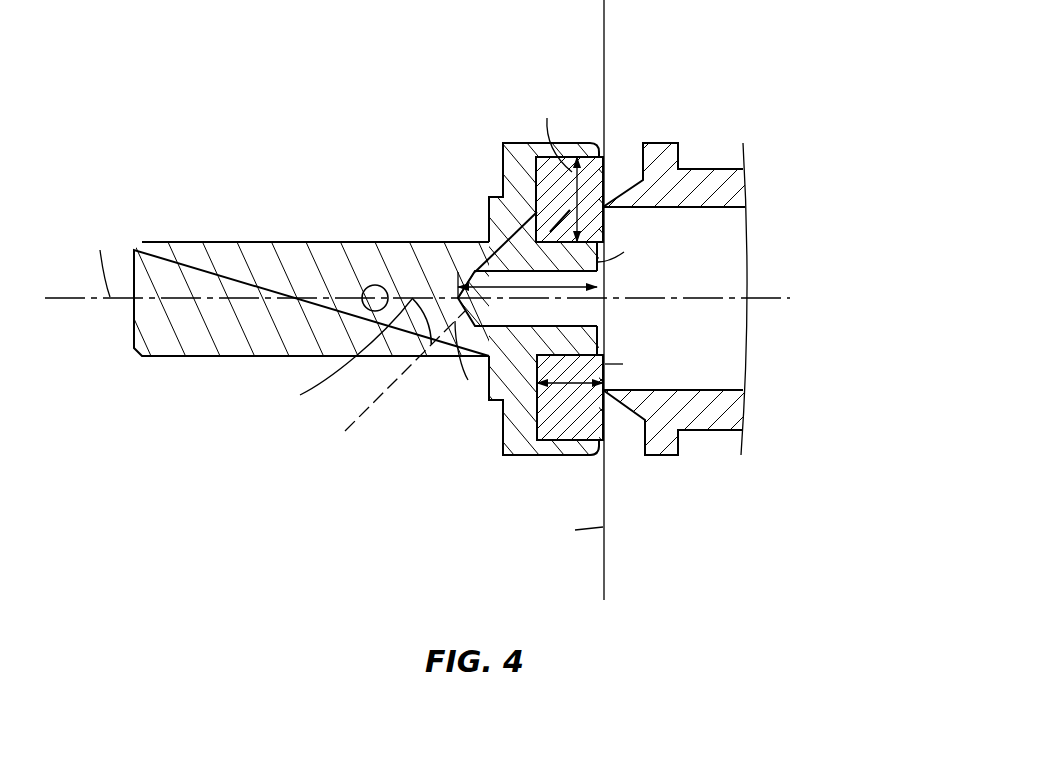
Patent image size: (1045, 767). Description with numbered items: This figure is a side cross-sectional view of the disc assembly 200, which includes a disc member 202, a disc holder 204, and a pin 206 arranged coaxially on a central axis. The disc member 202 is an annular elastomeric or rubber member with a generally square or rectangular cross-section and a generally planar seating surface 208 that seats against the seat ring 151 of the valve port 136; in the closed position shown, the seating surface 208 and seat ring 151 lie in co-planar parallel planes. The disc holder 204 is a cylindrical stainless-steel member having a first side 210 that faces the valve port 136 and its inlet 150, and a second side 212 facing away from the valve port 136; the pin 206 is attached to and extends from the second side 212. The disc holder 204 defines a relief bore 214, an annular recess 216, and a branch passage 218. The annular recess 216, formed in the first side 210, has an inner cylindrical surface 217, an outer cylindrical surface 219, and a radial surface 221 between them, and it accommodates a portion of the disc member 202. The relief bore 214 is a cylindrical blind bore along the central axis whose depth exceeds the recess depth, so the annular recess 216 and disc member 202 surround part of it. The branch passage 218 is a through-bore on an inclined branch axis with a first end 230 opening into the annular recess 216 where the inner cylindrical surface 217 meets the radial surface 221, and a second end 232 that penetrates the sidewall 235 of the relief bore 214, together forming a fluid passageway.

The disc assembly 200 is at (542, 300).
The disc member 202 is at (573, 310).
The disc holder 204 is at (533, 283).
The pin 206 is at (362, 362).
The seating surface 208 is at (605, 428).
The first side 210 is at (598, 445).
The second side 212 is at (505, 447).
The relief bore 214 is at (597, 327).
The annular recess 216 is at (547, 440).
The inner cylindrical surface 217 is at (607, 360).
The branch passage 218 is at (505, 250).
The outer cylindrical surface 219 is at (583, 440).
The radial surface 221 is at (538, 414).
The first end 230 is at (513, 173).
The second end 232 is at (478, 268).
The sidewall 235 is at (524, 272).
The valve port 136 is at (705, 433).
The inlet 150 is at (665, 310).
The seat ring 151 is at (674, 175).